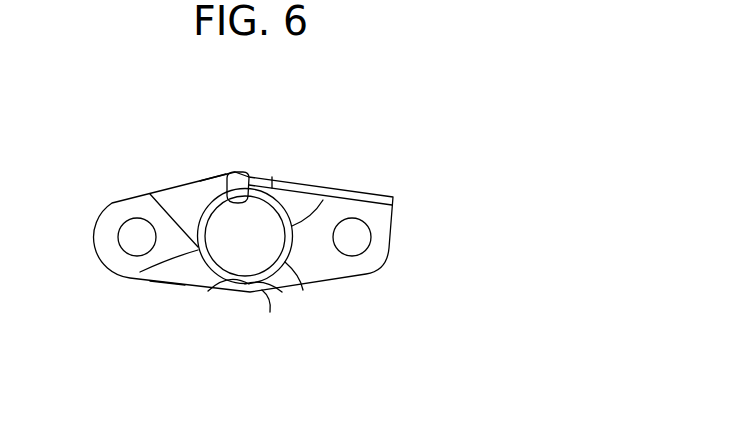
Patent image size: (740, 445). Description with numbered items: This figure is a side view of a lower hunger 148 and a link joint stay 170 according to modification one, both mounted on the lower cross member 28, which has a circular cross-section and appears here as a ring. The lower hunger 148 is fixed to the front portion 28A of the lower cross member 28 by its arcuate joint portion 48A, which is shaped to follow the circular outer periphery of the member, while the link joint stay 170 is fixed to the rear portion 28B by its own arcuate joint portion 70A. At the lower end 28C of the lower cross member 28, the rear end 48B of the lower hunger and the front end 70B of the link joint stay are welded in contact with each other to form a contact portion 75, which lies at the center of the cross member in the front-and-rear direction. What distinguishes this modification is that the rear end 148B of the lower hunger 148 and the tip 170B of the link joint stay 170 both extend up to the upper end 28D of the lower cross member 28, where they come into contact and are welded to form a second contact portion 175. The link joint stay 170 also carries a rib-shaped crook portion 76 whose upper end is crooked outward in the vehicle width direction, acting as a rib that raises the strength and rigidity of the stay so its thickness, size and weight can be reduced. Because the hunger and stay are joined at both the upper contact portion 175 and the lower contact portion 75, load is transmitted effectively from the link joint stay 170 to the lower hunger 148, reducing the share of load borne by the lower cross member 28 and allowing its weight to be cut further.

The lower cross member 28 is at (200, 196).
The front portion 28A is at (150, 194).
The rear portion 28B is at (323, 200).
The lower end 28C is at (207, 291).
The upper end 28D is at (223, 188).
The arcuate joint portion 48A is at (140, 272).
The rear end 48B is at (228, 293).
The arcuate joint portion 70A is at (303, 290).
The front end 70B is at (270, 312).
The contact portion 75 is at (250, 290).
The rib-shaped crook portion 76 is at (268, 176).
The lower hunger 148 is at (168, 279).
The rear end 148B is at (230, 172).
The link joint stay 170 is at (337, 279).
The tip 170B is at (293, 183).
The contact portion 175 is at (247, 176).